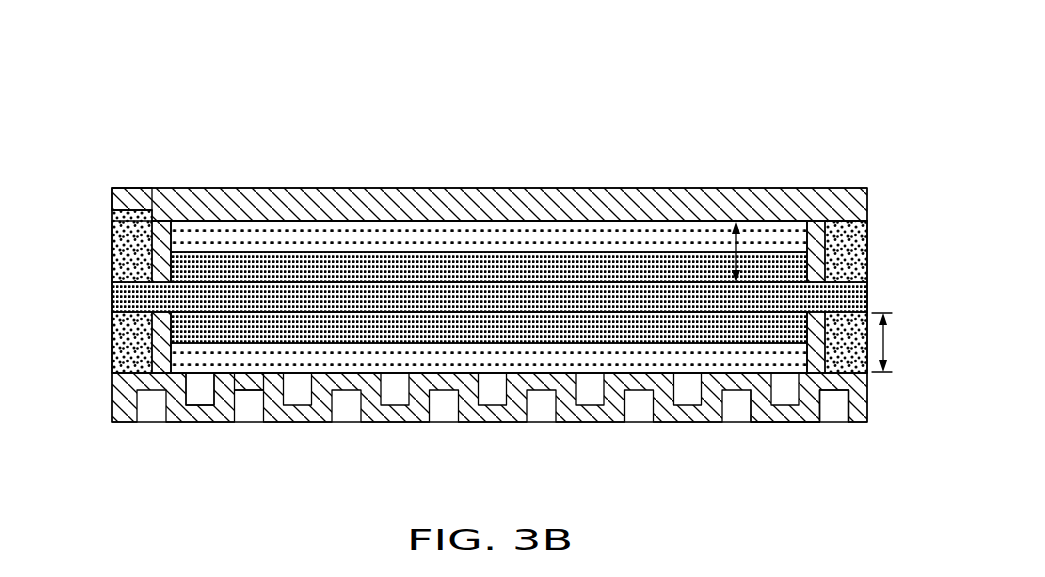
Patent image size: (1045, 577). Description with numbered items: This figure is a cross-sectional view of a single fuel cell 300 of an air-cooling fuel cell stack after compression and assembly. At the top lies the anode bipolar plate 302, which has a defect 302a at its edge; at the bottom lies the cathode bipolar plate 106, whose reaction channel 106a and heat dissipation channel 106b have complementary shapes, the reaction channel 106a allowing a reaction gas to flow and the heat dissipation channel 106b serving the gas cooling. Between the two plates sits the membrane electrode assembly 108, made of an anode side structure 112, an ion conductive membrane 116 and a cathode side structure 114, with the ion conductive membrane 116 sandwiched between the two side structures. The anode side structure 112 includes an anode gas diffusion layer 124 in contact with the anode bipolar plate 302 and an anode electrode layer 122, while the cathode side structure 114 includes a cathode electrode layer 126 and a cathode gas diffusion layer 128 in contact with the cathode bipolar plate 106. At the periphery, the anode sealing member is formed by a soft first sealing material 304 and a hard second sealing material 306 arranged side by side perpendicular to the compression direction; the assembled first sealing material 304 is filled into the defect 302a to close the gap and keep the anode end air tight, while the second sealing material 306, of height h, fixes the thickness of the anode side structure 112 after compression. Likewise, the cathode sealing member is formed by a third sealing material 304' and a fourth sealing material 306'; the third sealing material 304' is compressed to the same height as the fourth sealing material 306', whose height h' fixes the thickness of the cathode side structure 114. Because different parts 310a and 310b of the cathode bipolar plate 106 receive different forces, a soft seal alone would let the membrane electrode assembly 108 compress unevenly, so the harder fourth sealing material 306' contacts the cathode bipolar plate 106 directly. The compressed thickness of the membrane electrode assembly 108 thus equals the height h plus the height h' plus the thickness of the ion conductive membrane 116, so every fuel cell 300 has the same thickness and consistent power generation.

The fuel cell 300 is at (157, 136).
The anode bipolar plate 302 is at (258, 190).
The defect 302a is at (136, 216).
The first sealing material 304 is at (453, 247).
The third sealing material 304' is at (453, 349).
The second sealing material 306 is at (534, 251).
The fourth sealing material 306' is at (432, 342).
The membrane electrode assembly 108 is at (838, 17).
The anode side structure 112 is at (608, 148).
The cathode side structure 114 is at (450, 148).
The ion conductive membrane 116 is at (857, 298).
The anode electrode layer 122 is at (606, 265).
The anode gas diffusion layer 124 is at (525, 232).
The cathode electrode layer 126 is at (385, 325).
The cathode gas diffusion layer 128 is at (450, 360).
The cathode bipolar plate 106 is at (690, 413).
The reaction channel 106a is at (790, 413).
The heat dissipation channel 106b is at (835, 420).
The part 310a is at (201, 385).
The part 310b is at (250, 385).
The height h is at (715, 217).
The height h' is at (895, 342).